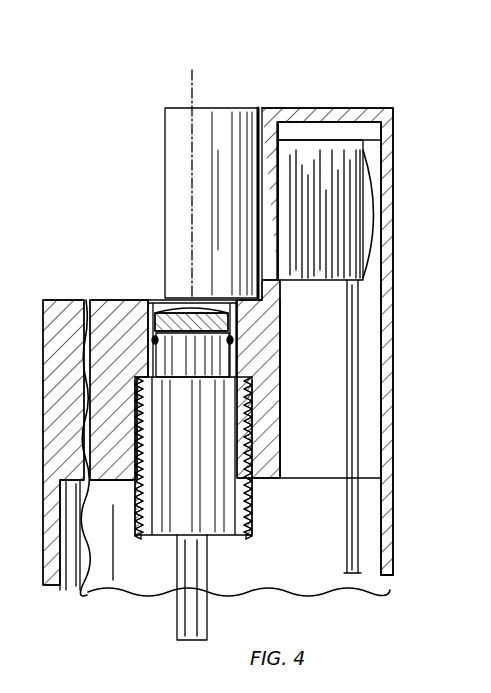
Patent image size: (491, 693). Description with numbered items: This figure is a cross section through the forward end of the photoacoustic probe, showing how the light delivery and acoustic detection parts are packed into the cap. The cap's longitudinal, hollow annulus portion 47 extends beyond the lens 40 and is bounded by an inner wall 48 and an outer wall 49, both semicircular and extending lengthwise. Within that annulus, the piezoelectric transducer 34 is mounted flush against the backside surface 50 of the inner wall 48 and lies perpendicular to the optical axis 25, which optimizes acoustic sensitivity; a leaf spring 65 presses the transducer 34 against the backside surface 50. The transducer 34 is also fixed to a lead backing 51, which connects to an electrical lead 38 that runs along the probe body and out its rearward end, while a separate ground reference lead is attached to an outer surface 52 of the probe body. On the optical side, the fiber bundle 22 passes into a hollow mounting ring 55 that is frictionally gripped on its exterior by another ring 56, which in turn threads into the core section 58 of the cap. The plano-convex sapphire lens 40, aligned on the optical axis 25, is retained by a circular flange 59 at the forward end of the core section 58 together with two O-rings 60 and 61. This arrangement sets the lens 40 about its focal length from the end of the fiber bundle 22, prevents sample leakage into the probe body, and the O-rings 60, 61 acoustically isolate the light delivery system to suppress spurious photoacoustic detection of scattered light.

The fiber bundle 22 is at (207, 549).
The optical axis 25 is at (197, 68).
The piezoelectric transducer 34 is at (318, 140).
The electrical lead 38 is at (347, 377).
The lens 40 is at (205, 302).
The annulus portion 47 is at (164, 177).
The inner wall 48 is at (268, 160).
The outer wall 49 is at (383, 164).
The backside surface 50 is at (281, 306).
The lead backing 51 is at (362, 140).
The outer surface 52 is at (395, 576).
The mounting ring 55 is at (175, 520).
The ring 56 is at (248, 512).
The core section 58 is at (43, 339).
The circular flange 59 is at (190, 306).
The O-ring 60 is at (151, 318).
The O-ring 61 is at (145, 327).
The leaf spring 65 is at (372, 246).